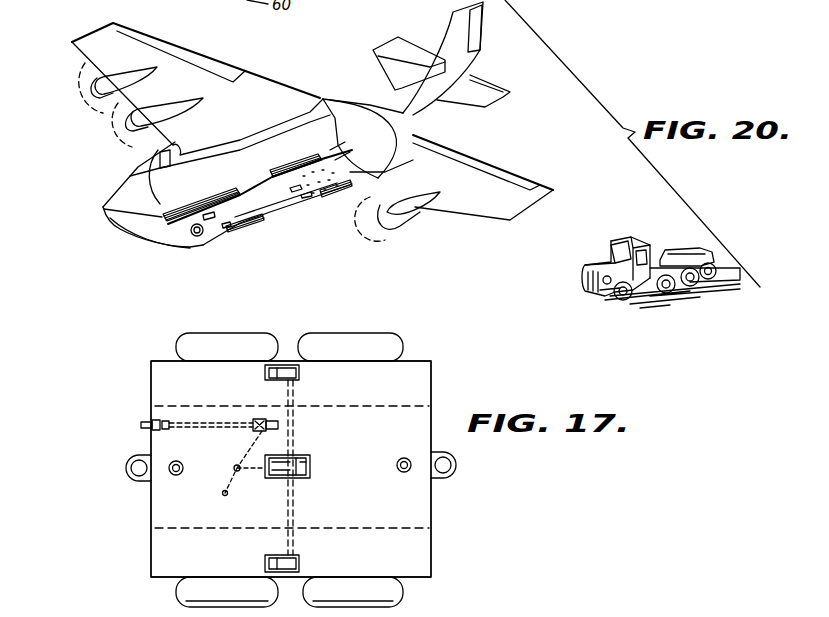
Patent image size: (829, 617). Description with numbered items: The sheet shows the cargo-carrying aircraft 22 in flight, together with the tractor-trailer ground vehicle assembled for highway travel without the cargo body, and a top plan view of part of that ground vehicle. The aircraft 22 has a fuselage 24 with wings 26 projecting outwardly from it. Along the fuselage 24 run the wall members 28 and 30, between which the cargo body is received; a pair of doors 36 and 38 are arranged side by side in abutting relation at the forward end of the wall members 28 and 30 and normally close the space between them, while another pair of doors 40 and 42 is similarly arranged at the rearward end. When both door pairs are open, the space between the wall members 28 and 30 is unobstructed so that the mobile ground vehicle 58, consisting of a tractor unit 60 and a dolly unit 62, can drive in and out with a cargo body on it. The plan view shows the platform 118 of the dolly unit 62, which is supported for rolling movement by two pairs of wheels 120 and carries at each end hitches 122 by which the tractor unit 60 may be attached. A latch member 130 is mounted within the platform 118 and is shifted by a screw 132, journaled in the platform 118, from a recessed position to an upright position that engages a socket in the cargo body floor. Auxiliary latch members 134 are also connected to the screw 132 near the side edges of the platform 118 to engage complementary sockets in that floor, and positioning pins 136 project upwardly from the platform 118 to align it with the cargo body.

In FIG. 20, the cargo-carrying aircraft 22 is at (327, 88).
In FIG. 20, the fuselage 24 is at (108, 216).
In FIG. 20, the wings 26 is at (266, 78).
In FIG. 20, the wall member 28 is at (231, 187).
In FIG. 20, the wall member 30 is at (283, 214).
In FIG. 20, the door 36 is at (170, 171).
In FIG. 20, the door 38 is at (184, 246).
In FIG. 20, the door 40 is at (368, 136).
In FIG. 20, the door 42 is at (386, 166).
In FIG. 20, the mobile ground vehicle 58 is at (676, 304).
In FIG. 20, the tractor unit 60 is at (614, 259).
In FIG. 20, the dolly unit 62 is at (693, 250).
In FIG. 17, the dolly unit 62 is at (443, 391).
In FIG. 17, the platform 118 is at (425, 555).
In FIG. 17, the wheels 120 is at (404, 596).
In FIG. 17, the hitches 122 is at (132, 478).
In FIG. 17, the latch member 130 is at (307, 455).
In FIG. 17, the screw 132 is at (145, 422).
In FIG. 17, the auxiliary latch members 134 is at (281, 365).
In FIG. 17, the positioning pins 136 is at (404, 458).